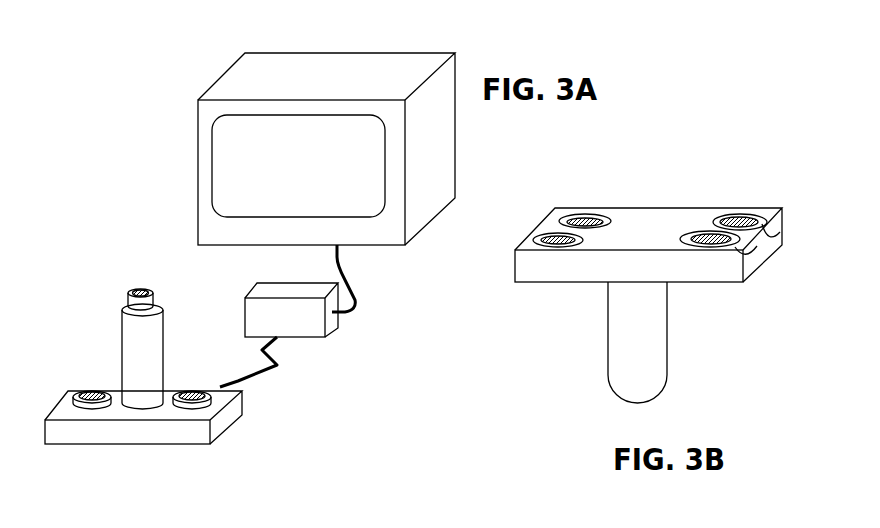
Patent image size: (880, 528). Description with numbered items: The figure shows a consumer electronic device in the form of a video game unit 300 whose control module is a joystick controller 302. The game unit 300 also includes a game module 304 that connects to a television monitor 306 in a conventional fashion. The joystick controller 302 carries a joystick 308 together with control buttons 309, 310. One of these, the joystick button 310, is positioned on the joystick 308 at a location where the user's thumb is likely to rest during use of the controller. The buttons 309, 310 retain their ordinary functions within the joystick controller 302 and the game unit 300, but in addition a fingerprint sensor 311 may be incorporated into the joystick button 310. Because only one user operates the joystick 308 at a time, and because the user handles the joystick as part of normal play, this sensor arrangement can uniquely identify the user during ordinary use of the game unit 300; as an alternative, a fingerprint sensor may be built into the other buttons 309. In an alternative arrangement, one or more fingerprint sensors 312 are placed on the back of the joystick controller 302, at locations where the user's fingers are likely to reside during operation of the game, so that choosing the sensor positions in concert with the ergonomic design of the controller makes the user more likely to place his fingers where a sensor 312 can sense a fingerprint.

In FIG. 3A, the video game unit 300 is at (92, 27).
In FIG. 3A, the joystick controller 302 is at (137, 437).
In FIG. 3B, the joystick controller 302 is at (707, 274).
In FIG. 3A, the game module 304 is at (268, 285).
In FIG. 3A, the television monitor 306 is at (248, 78).
In FIG. 3A, the joystick 308 is at (133, 352).
In FIG. 3A, the control buttons 309 is at (72, 397).
In FIG. 3A, the joystick button 310 is at (130, 305).
In FIG. 3B, the fingerprint sensor 311 is at (606, 216).
In FIG. 3A, the fingerprint sensors 312 is at (140, 292).
In FIG. 3B, the fingerprint sensors 312 is at (580, 222).